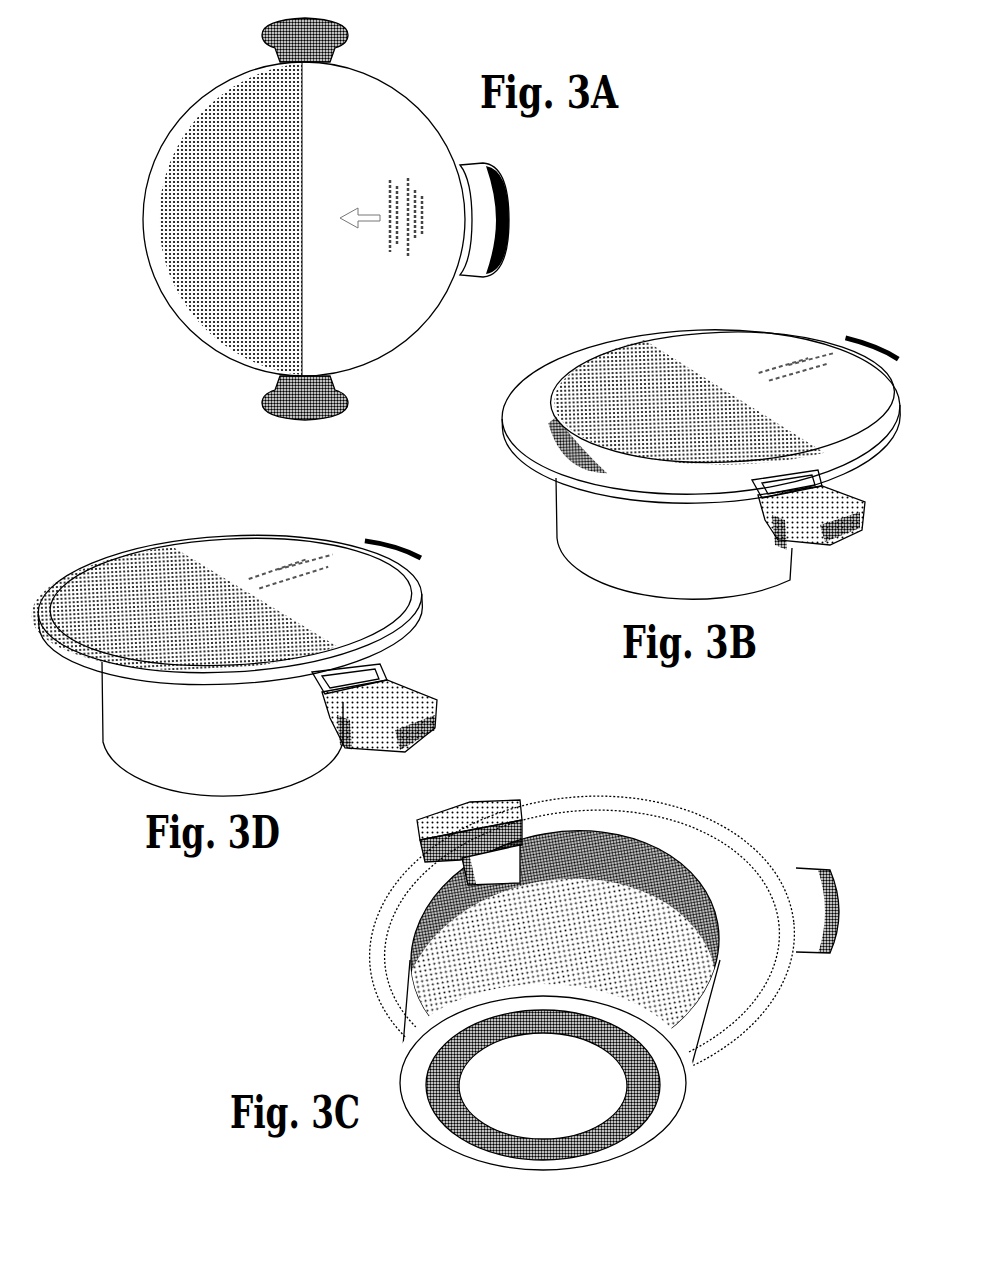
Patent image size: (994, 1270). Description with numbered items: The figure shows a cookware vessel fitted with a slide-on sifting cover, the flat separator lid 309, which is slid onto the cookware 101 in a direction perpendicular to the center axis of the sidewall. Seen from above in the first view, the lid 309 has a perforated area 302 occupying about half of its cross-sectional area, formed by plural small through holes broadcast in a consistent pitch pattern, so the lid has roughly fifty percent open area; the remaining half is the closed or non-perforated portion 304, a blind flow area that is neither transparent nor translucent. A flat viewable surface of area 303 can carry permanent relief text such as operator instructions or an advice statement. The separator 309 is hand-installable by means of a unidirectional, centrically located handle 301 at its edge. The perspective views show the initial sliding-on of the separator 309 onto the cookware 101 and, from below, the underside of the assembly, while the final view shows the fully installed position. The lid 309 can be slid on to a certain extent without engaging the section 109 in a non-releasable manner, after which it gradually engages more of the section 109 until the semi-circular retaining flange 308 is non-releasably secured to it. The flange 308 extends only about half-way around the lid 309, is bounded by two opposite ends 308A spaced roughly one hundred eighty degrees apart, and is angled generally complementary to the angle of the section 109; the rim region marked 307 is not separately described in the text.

In FIG. 3B, the cookware 101 is at (630, 565).
In FIG. 3C, the cookware 101 is at (532, 1083).
In FIG. 3C, the section 109 is at (402, 930).
In FIG. 3A, the handle 301 is at (515, 239).
In FIG. 3A, the perforated area 302 is at (198, 152).
In FIG. 3A, the flat viewable surface of area 303 is at (329, 166).
In FIG. 3A, the closed or non-perforated portion 304 is at (392, 268).
In FIG. 3C, the lid rim channel 307 is at (617, 826).
In FIG. 3C, the semi-circular retaining flange 308 is at (783, 908).
In FIG. 3B, the opposite ends 308A is at (851, 457).
In FIG. 3C, the opposite ends 308A is at (547, 807).
In FIG. 3A, the flat separator lid 309 is at (189, 342).
In FIG. 3B, the flat separator lid 309 is at (653, 333).
In FIG. 3D, the flat separator lid 309 is at (130, 543).